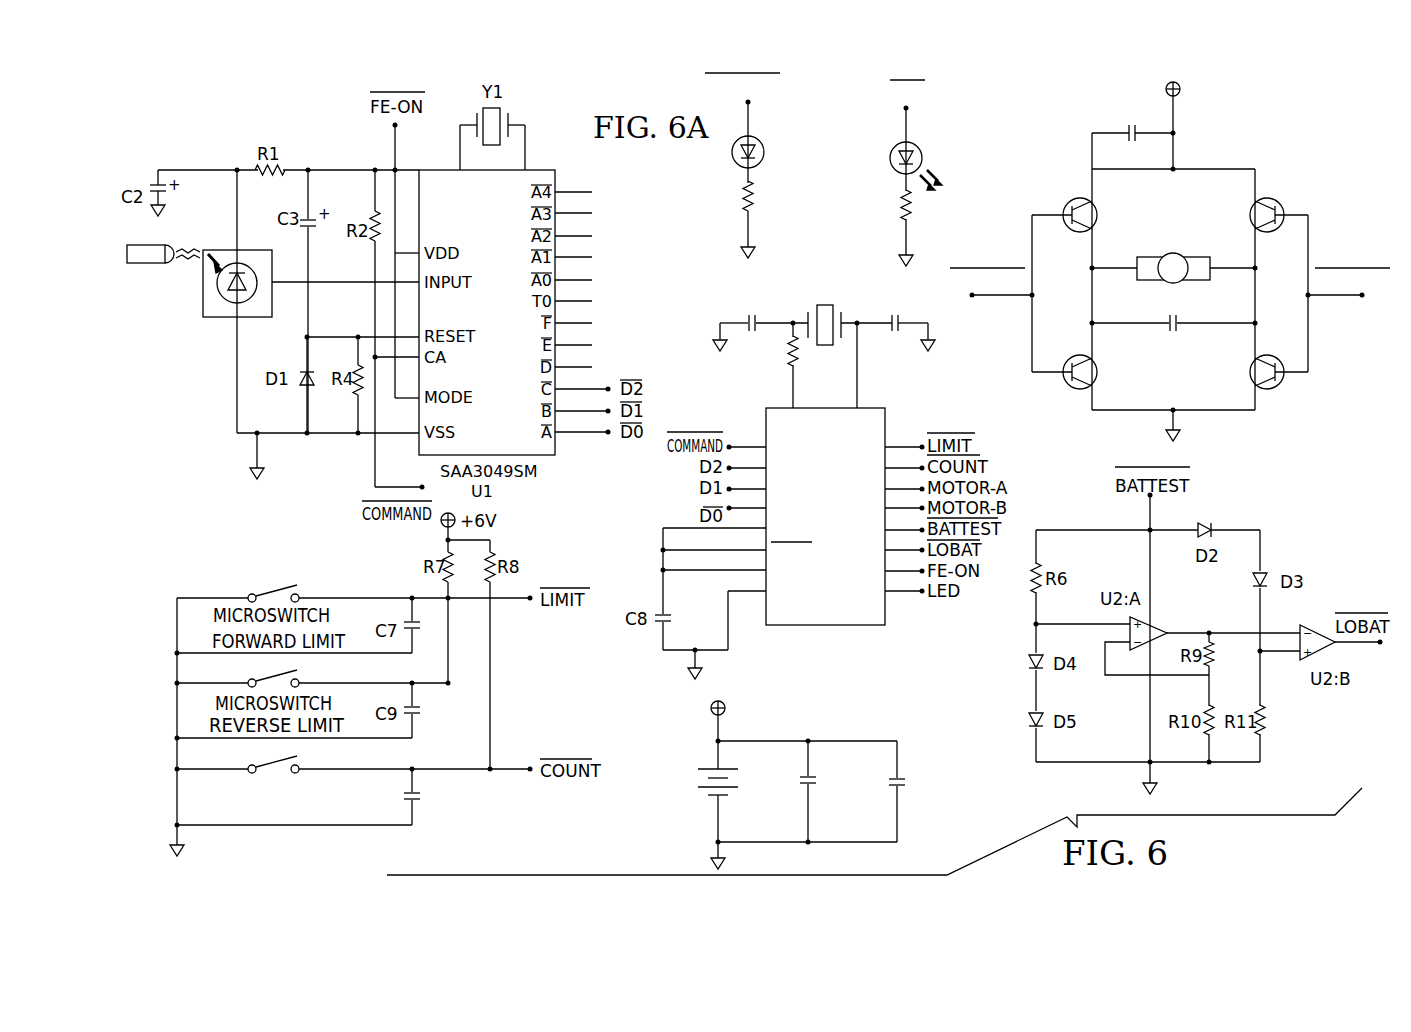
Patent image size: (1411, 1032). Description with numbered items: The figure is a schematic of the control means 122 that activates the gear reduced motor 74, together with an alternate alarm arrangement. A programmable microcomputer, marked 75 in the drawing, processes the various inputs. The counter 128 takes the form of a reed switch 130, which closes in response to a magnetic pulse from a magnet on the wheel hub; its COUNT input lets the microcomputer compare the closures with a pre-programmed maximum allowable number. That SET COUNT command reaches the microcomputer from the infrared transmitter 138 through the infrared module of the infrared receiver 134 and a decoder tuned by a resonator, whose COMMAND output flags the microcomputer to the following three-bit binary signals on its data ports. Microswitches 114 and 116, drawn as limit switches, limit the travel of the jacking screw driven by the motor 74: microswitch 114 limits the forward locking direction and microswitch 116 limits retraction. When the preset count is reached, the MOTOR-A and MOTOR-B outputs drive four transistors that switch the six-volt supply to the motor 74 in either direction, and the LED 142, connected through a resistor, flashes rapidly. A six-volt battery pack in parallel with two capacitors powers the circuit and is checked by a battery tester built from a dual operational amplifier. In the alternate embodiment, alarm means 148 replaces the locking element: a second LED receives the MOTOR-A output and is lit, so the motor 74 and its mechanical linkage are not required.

The gear reduced motor 74 is at (1208, 218).
The microcontroller U3 75 is at (853, 541).
The microswitch 114 is at (300, 677).
The microswitch 116 is at (262, 592).
The control means 122 is at (720, 267).
The counter 128 is at (341, 810).
The reed switch 130 is at (297, 762).
The infrared receiver 134 is at (214, 322).
The infrared signal generator 138 is at (163, 300).
The LED 142 is at (942, 110).
The alarm means 148 is at (766, 203).